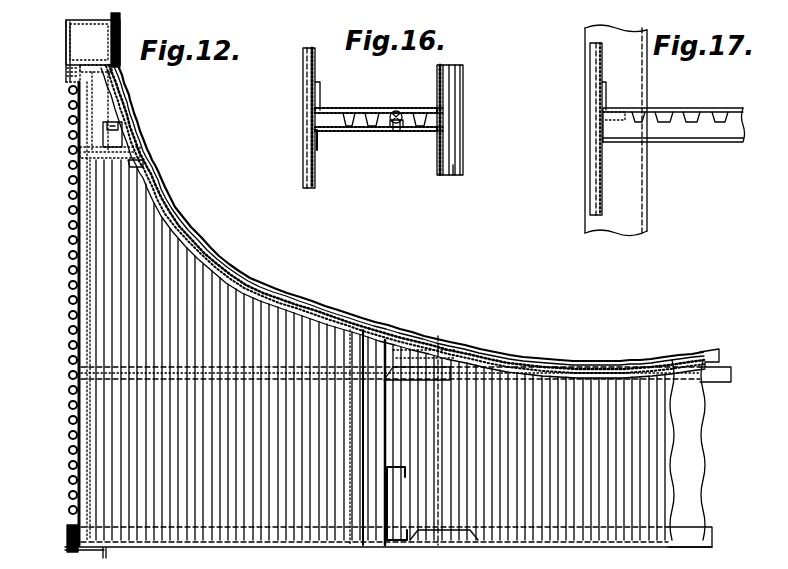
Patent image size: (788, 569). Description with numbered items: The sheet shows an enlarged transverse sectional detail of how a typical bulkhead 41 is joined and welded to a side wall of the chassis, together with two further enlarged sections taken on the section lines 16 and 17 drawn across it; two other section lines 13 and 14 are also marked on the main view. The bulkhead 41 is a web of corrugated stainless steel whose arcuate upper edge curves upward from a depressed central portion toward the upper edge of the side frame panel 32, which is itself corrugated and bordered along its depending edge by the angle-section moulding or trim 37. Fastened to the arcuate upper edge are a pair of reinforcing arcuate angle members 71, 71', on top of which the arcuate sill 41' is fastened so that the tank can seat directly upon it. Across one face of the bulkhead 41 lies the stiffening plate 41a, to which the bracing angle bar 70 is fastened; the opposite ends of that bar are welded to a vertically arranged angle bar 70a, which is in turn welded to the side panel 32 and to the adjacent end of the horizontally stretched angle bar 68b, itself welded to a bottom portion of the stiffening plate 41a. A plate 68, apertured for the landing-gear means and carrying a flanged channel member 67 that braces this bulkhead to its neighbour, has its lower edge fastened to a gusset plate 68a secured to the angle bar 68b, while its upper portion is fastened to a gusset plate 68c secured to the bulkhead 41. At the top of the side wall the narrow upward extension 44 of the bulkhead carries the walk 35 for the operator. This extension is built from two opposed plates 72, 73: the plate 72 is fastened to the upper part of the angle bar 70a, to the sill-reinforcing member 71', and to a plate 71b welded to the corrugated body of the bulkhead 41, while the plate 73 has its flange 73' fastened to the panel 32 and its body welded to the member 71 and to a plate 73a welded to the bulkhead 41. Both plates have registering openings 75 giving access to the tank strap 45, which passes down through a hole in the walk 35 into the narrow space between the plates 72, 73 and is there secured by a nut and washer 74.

In FIG. 12, the side frame panel 32 is at (65, 328).
In FIG. 16, the side frame panel 32 is at (300, 155).
In FIG. 17, the side frame panel 32 is at (588, 184).
In FIG. 12, the tread or walk 35 is at (86, 20).
In FIG. 12, the moulding or trim 37 is at (83, 548).
In FIG. 17, the moulding or trim 37 is at (623, 220).
In FIG. 12, the bulkhead 41 is at (380, 350).
In FIG. 16, the bulkhead 41 is at (466, 115).
In FIG. 17, the bulkhead 41 is at (673, 144).
In FIG. 12, the arcuate sill 41' is at (406, 217).
In FIG. 16, the arcuate sill 41' is at (455, 182).
In FIG. 12, the stiffening plate 41a is at (695, 465).
In FIG. 12, the extension 44 is at (127, 88).
In FIG. 12, the strap 45 is at (120, 14).
In FIG. 12, the flanged channel member 67 is at (376, 542).
In FIG. 12, the plate 68 is at (384, 340).
In FIG. 12, the gusset plate 68a is at (473, 541).
In FIG. 12, the angle bar 68b is at (680, 548).
In FIG. 17, the angle bar 68b is at (704, 143).
In FIG. 12, the gusset plate 68c is at (453, 352).
In FIG. 12, the bracing angle bar 70 is at (74, 368).
In FIG. 12, the vertically arranged angle bar 70a is at (78, 484).
In FIG. 16, the vertically arranged angle bar 70a is at (318, 95).
In FIG. 17, the vertically arranged angle bar 70a is at (604, 98).
In FIG. 12, the reinforcing arcuate angle member 71 is at (403, 222).
In FIG. 16, the reinforcing arcuate angle member 71 is at (425, 136).
In FIG. 12, the reinforcing arcuate angle member 71' is at (717, 344).
In FIG. 16, the reinforcing arcuate angle member 71' is at (426, 116).
In FIG. 16, the plate or member 71b is at (352, 118).
In FIG. 12, the plate 72 is at (140, 166).
In FIG. 16, the plate 72 is at (358, 117).
In FIG. 16, the plate 73 is at (376, 133).
In FIG. 16, the flange 73' is at (334, 157).
In FIG. 16, the plate 73a is at (386, 108).
In FIG. 12, the nut and washer 74 is at (102, 131).
In FIG. 16, the nut and washer 74 is at (398, 131).
In FIG. 12, the registering opening 75 is at (114, 125).
In FIG. 12, the section line 13 is at (428, 563).
In FIG. 12, the section line 14 is at (475, 453).
In FIG. 12, the section line 16— 16 is at (173, 117).
In FIG. 12, the section line 17— 17 is at (140, 505).